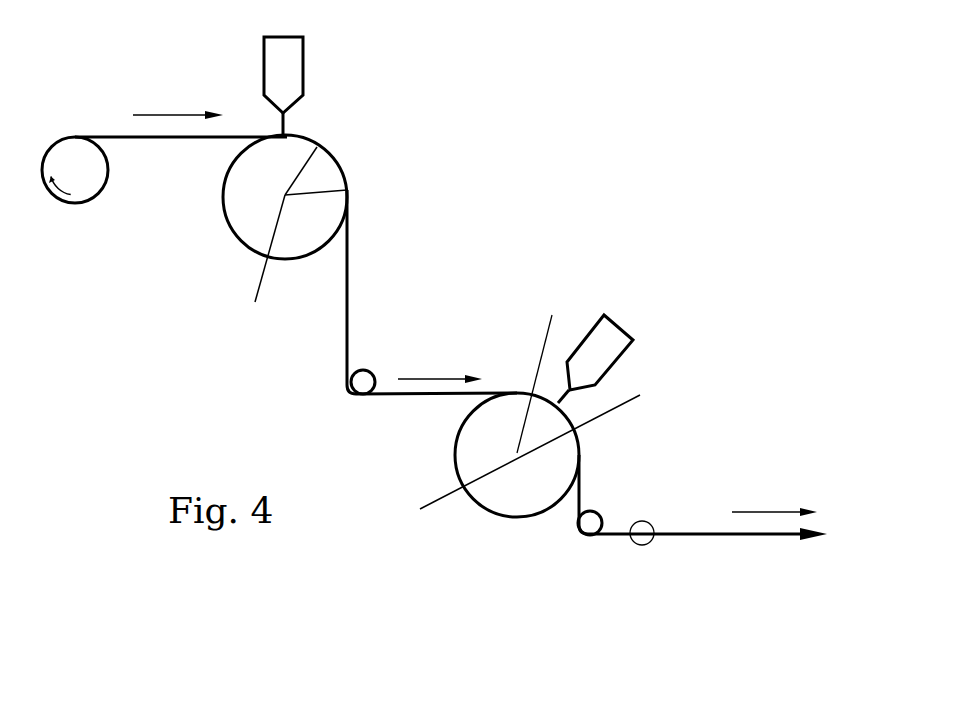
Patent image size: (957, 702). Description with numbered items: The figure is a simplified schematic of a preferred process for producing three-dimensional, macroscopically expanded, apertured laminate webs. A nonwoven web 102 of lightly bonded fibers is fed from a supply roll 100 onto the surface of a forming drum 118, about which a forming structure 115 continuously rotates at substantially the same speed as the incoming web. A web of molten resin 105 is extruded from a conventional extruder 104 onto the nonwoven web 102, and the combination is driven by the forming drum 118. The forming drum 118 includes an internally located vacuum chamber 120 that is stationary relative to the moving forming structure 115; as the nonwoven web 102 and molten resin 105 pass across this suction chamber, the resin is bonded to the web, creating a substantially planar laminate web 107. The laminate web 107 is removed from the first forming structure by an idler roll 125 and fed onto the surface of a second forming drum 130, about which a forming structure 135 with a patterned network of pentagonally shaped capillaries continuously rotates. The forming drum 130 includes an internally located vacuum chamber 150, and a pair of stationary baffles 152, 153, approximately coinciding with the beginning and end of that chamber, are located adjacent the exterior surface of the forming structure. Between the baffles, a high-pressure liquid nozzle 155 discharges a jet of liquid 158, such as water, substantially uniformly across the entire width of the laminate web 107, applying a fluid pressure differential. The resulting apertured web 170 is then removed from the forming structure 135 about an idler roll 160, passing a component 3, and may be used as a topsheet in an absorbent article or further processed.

The sensor 3 is at (643, 540).
The supply roll 100 is at (88, 202).
The nonwoven web 102 is at (174, 138).
The extruder 104 is at (290, 67).
The molten resin 105 is at (287, 125).
The laminate web 107 is at (352, 287).
The forming structure 115 is at (305, 257).
The forming drum 118 is at (257, 265).
The vacuum chamber 120 is at (285, 238).
The idler roll 125 is at (362, 383).
The forming drum 130 is at (470, 442).
The forming structure 135 is at (487, 510).
The vacuum chamber 150 is at (506, 460).
The stationary baffle 152 is at (545, 342).
The stationary baffle 153 is at (627, 402).
The high-pressure liquid nozzle 155 is at (628, 345).
The jet of liquid 158 is at (565, 395).
The idler roll 160 is at (585, 530).
The apertured web 170 is at (582, 492).